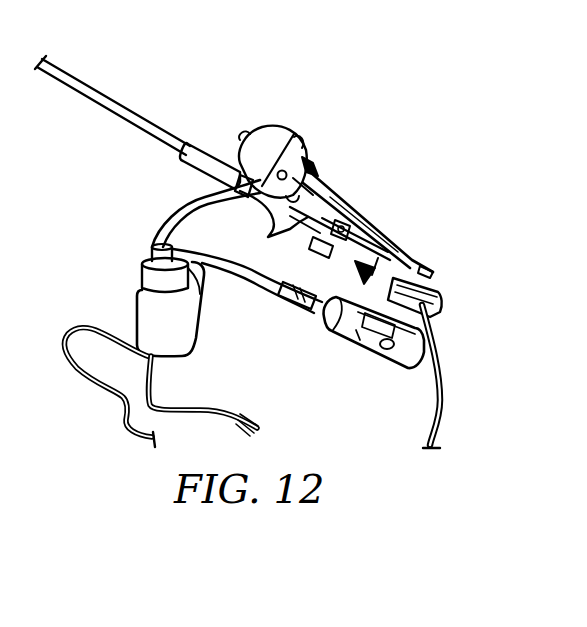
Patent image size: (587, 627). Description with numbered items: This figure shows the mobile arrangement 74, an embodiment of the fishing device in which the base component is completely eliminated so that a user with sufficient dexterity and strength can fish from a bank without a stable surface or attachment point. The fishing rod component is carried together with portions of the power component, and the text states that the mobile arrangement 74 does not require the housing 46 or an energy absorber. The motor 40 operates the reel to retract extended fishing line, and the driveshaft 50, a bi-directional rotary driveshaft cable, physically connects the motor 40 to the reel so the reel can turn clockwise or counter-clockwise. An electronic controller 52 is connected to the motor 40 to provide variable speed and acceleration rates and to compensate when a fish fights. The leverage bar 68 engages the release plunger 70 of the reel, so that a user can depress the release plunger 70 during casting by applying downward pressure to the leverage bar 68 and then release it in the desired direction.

The mobile arrangement 74 is at (92, 202).
The housing 46 is at (275, 140).
The release plunger 70 is at (312, 179).
The driveshaft 50 is at (183, 207).
The leverage bar 68 is at (365, 224).
The motor 40 is at (358, 336).
The electronic controller 52 is at (142, 295).